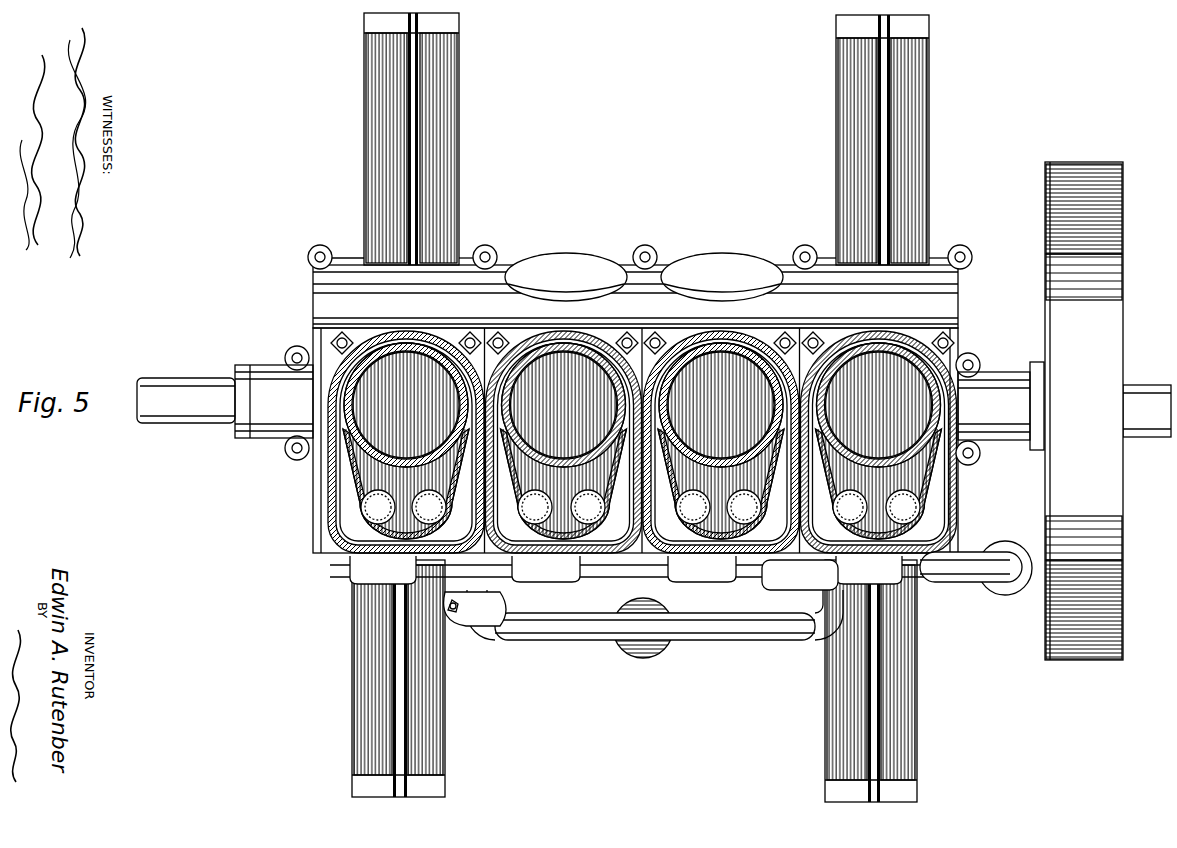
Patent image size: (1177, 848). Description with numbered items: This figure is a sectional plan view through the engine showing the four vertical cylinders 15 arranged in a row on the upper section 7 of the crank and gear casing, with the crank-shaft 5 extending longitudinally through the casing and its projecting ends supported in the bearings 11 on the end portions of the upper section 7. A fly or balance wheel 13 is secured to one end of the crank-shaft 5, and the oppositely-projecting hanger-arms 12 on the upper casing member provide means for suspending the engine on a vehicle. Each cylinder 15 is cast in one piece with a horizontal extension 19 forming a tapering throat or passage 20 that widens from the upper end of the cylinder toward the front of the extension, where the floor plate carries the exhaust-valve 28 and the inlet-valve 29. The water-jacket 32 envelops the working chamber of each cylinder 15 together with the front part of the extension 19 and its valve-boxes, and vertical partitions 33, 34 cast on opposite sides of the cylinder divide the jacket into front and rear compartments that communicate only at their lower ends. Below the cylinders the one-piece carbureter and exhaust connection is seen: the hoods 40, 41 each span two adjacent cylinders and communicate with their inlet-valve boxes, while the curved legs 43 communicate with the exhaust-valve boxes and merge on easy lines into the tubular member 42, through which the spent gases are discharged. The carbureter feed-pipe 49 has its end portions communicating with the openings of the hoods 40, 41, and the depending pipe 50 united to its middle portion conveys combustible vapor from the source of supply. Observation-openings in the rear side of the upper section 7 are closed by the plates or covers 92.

The crank-shaft 5 is at (186, 422).
The upper section of the casing 7 is at (640, 286).
The bearings 11 is at (262, 436).
The hanger-arms 12 is at (455, 158).
The fly or balance wheel 13 is at (1046, 624).
The cylinders 15 is at (282, 482).
The horizontal extension 19 is at (330, 495).
The tapering throat or passage 20 is at (642, 484).
The exhaust-valve 28 is at (640, 507).
The inlet-valve 29 is at (639, 507).
The water-jacket 32 is at (520, 338).
The vertical partition 33 is at (335, 348).
The vertical partition 34 is at (706, 404).
The hood 40 is at (444, 616).
The hood 41 is at (787, 577).
The tubular member 42 is at (958, 580).
The legs 43 is at (356, 568).
The carbureter feed-pipe 49 is at (578, 641).
The depending pipe 50 is at (658, 642).
The plates or covers 92 is at (566, 262).